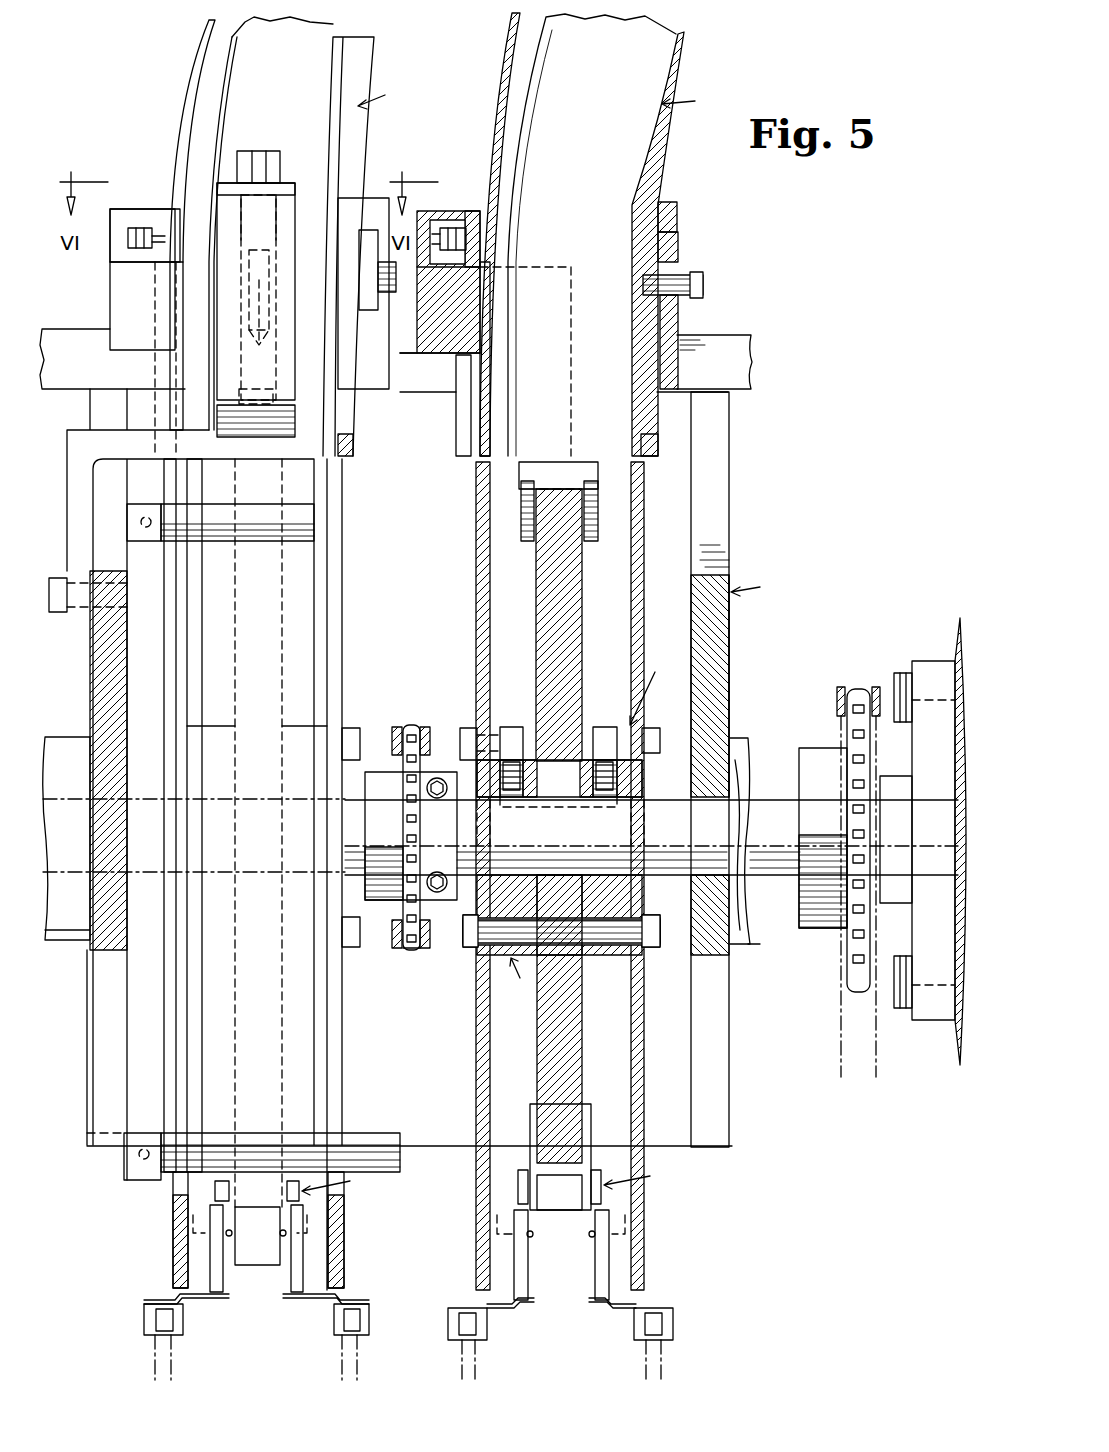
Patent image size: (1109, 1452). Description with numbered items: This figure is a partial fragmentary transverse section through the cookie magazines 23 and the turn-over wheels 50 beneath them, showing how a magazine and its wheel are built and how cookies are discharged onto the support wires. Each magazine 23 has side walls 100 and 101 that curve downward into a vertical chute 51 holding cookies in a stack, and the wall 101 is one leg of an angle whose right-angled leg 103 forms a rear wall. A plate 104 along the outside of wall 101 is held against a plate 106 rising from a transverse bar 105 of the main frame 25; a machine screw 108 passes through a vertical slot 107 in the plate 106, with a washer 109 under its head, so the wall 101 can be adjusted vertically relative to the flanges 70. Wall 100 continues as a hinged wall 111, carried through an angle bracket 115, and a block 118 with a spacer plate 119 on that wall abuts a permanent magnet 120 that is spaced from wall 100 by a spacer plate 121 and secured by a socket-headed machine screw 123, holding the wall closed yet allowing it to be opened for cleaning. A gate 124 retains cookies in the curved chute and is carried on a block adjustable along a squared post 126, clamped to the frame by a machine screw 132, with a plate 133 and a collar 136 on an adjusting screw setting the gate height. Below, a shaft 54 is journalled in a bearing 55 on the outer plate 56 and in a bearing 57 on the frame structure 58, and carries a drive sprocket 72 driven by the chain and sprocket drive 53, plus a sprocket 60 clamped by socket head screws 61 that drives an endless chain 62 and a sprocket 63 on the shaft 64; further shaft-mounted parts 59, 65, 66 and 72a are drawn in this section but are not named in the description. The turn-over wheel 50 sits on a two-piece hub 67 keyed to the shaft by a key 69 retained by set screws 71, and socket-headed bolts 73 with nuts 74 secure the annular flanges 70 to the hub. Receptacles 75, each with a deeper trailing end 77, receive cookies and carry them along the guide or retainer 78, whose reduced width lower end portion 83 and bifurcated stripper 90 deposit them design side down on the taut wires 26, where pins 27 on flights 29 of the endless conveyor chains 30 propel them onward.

The magazine 23 is at (541, 92).
The main frame 25 is at (741, 769).
The taut wires 26 is at (226, 1233).
The pins 27 is at (210, 1262).
The flights 29 is at (150, 1300).
The endless conveyor chains 30 is at (183, 1330).
The turn-over wheel 50 is at (290, 596).
The chute 51 is at (354, 443).
The chain and sprocket drive 53 is at (839, 687).
The shaft 54 is at (745, 802).
The bearing 55 is at (928, 661).
The outer plate 56 is at (958, 1046).
The bearing 57 is at (750, 942).
The frame structure 58 is at (730, 690).
The sprocket 59 is at (815, 748).
The sprocket 60 is at (410, 727).
The socket head screws 61 is at (438, 780).
The endless chain 62 is at (412, 950).
The sprocket 63 is at (372, 772).
The shaft 64 is at (375, 930).
The bearing housing 65 is at (60, 737).
The bearing block 66 is at (90, 656).
The hub 67 is at (568, 825).
The key 69 is at (620, 797).
The side plates or flanges 70 is at (165, 475).
The set screws 71 is at (508, 798).
The drive sprocket 72 is at (851, 985).
The spacer block 72a is at (515, 735).
The socket-headed bolts 73 is at (656, 728).
The nuts 74 is at (465, 728).
The cookie receiving receptacles 75 is at (546, 465).
The trailing end 77 is at (575, 470).
The guide or retainer 78 is at (302, 508).
The reduced width lower end portion 83 is at (258, 1266).
The bifurcated stripper 90 is at (448, 1179).
The side wall 100 is at (184, 140).
The side wall 101 is at (345, 150).
The right-angled leg 103 is at (640, 36).
The plate 104 is at (677, 212).
The transverse bar 105 is at (752, 360).
The plate 106 is at (700, 392).
The vertical slot 107 is at (679, 312).
The machine screw 108 is at (704, 286).
The washer 109 is at (680, 259).
The hinged wall 111 is at (184, 362).
The angle bracket 115 is at (572, 366).
The block 118 is at (128, 345).
The spacer plate 119 is at (110, 292).
The permanent magnet 120 is at (136, 210).
The spacer plate 121 is at (170, 210).
The socket-headed machine screw 123 is at (468, 238).
The gate 124 is at (300, 38).
The squared post 126 is at (283, 310).
The machine screw 132 is at (265, 158).
The plate 133 is at (235, 183).
The collar 136 is at (280, 215).